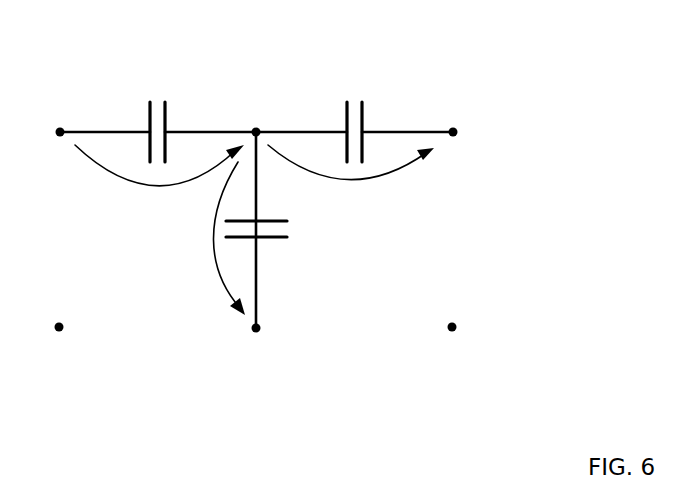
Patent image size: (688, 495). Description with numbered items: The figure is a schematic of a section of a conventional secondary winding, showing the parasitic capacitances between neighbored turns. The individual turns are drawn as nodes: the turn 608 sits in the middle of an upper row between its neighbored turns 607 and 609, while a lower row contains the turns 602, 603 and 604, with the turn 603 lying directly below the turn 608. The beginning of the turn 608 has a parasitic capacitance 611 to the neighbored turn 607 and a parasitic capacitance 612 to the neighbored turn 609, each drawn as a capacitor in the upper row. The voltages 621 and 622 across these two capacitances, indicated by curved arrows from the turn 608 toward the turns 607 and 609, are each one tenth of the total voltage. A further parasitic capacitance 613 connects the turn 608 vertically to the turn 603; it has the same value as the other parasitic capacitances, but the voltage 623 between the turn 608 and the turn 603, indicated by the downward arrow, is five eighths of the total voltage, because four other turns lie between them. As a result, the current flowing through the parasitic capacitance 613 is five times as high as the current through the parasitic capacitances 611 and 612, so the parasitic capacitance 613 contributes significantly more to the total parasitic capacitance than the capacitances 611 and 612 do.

The turn 602 is at (60, 332).
The turn 603 is at (256, 333).
The turn 604 is at (453, 332).
The neighbored turn 607 is at (453, 127).
The turn 608 is at (256, 127).
The neighbored turn 609 is at (60, 127).
The parasitic capacitance 611 is at (363, 116).
The parasitic capacitance 612 is at (166, 116).
The parasitic capacitance 613 is at (274, 240).
The voltage 621 is at (357, 179).
The voltage 622 is at (160, 182).
The voltage 623 is at (218, 276).